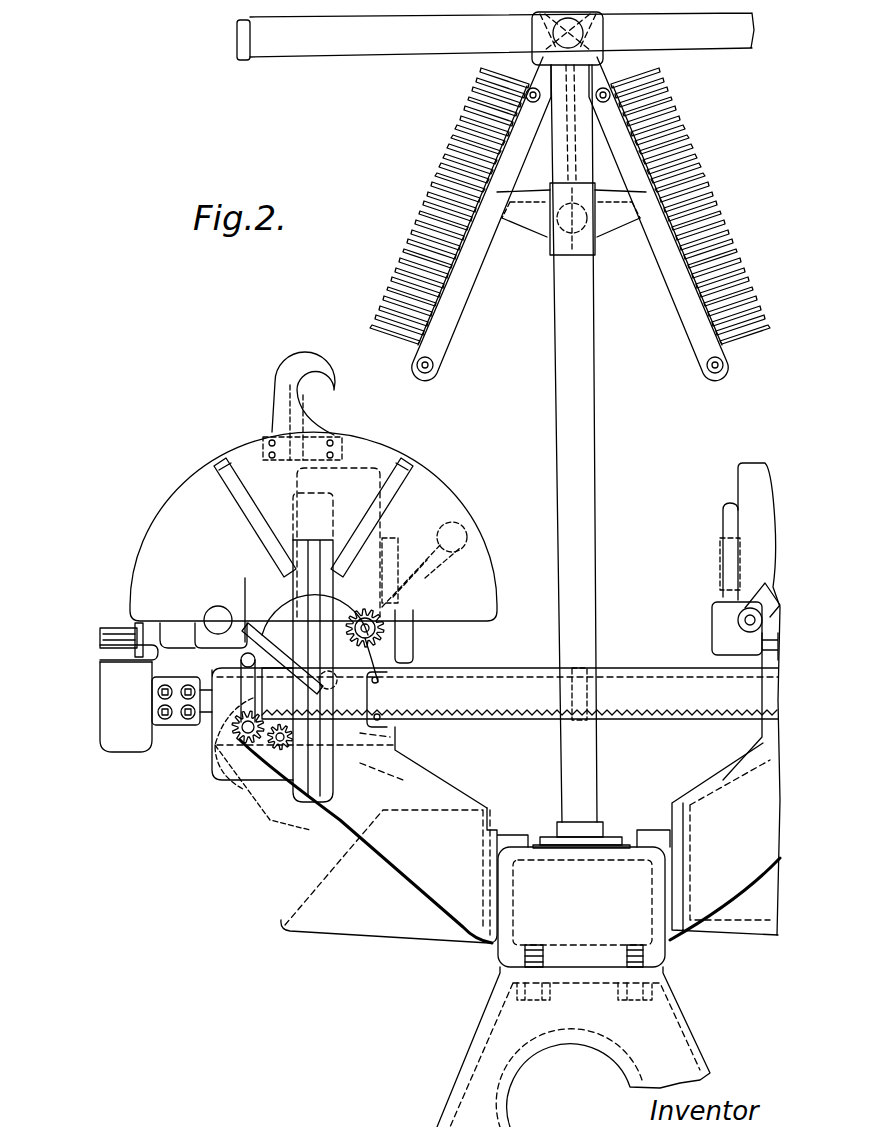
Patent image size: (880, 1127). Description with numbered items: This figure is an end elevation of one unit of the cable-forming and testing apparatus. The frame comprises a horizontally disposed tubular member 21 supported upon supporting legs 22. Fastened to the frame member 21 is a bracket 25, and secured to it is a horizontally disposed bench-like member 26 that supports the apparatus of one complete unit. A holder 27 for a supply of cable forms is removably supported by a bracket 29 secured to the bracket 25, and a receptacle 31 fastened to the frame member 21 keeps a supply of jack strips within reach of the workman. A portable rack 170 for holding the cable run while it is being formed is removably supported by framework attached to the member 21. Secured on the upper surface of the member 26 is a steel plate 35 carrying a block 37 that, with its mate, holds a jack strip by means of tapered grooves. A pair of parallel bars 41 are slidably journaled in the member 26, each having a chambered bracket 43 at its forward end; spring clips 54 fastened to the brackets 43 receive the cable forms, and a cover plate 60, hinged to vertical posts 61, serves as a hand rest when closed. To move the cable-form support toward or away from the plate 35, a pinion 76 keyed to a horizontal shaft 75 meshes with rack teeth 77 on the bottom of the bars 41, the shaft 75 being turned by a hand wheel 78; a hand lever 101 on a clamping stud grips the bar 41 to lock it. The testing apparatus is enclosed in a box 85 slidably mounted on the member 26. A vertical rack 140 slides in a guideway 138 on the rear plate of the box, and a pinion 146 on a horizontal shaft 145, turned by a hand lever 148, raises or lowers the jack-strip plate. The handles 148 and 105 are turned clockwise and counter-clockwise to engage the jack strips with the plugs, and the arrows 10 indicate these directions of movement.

The portable rack 170 is at (438, 165).
The holder 27 is at (185, 493).
The box 85 is at (349, 467).
The rack 140 is at (388, 538).
The guideway 138 is at (393, 560).
The hand lever 148 is at (425, 578).
The bracket 29 is at (353, 623).
The block 37 is at (209, 625).
The direction arrow 10 is at (263, 776).
The handle 105 is at (282, 650).
The hand lever 101 is at (213, 723).
The pinion 76 is at (238, 740).
The horizontal shaft 75 is at (274, 740).
The bench-like member 26 is at (230, 720).
The parallel bars 41 is at (498, 680).
The horizontal shaft 145 is at (393, 672).
The pinion 146 is at (380, 684).
The rack teeth 77 is at (396, 736).
The cover plate 60 is at (110, 633).
The vertical posts 61 is at (100, 640).
The spring clips 54 is at (130, 660).
The chambered bracket 43 is at (115, 720).
The steel plate 35 is at (210, 642).
The bracket 25 is at (340, 822).
The hand wheel 78 is at (283, 813).
The receptacle 31 is at (380, 930).
The tubular member 21 is at (607, 867).
The supporting legs 22 is at (470, 1068).